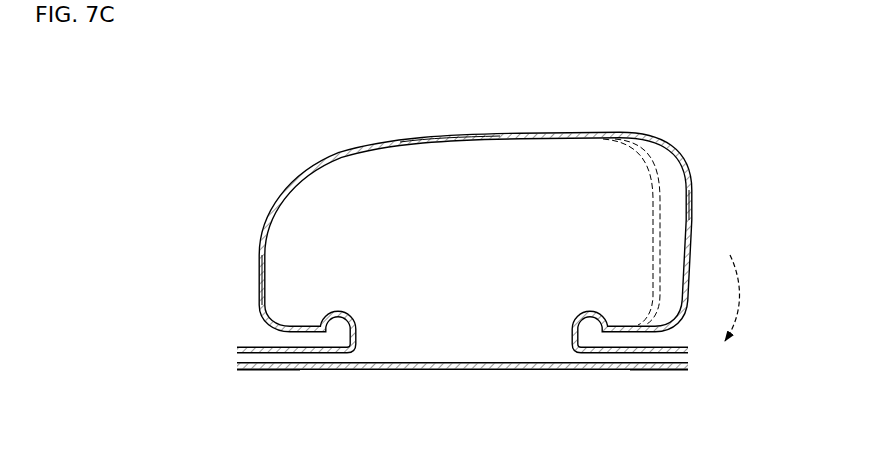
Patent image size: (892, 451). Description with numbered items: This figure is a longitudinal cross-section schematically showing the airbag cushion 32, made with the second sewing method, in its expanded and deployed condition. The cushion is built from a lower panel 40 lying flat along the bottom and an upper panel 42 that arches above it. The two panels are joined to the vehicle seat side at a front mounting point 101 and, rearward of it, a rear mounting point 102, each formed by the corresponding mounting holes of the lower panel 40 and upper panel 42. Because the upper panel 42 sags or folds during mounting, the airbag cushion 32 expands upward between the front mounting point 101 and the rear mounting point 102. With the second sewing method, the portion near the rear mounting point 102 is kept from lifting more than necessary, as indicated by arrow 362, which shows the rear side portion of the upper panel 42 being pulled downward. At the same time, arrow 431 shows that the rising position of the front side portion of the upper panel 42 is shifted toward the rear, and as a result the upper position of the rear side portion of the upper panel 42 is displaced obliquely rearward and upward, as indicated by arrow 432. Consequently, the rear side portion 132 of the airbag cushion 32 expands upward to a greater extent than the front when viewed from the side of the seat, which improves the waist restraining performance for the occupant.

The airbag cushion 32 is at (504, 127).
The upper panel 42 is at (450, 137).
The rear side portion 132 is at (695, 197).
The arrow 432 is at (660, 154).
The arrow 431 is at (256, 314).
The arrow 362 is at (740, 297).
The lower panel 40 is at (465, 372).
The front mounting point 101 is at (282, 380).
The rear mounting point 102 is at (660, 380).